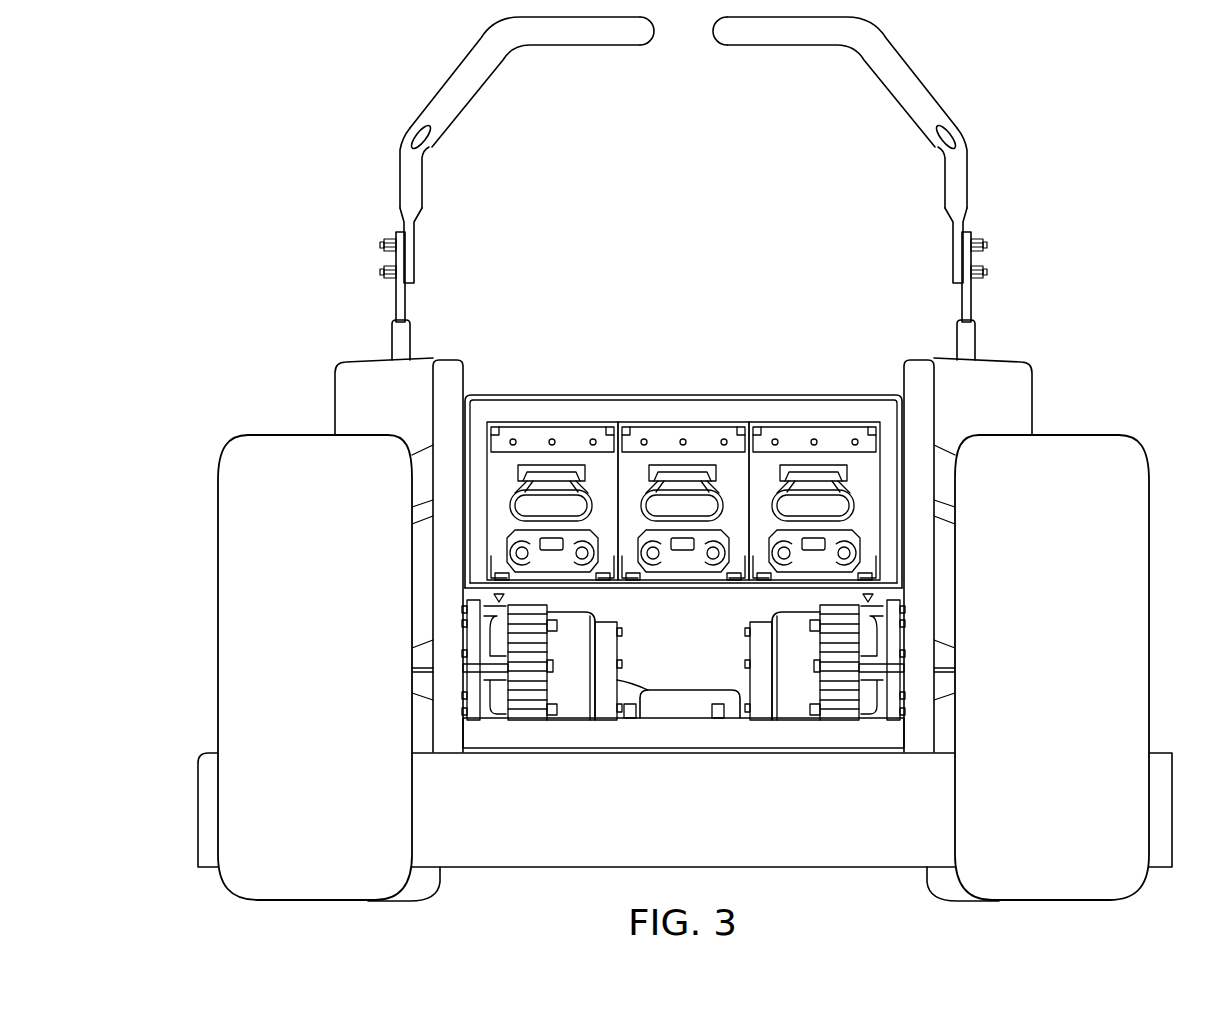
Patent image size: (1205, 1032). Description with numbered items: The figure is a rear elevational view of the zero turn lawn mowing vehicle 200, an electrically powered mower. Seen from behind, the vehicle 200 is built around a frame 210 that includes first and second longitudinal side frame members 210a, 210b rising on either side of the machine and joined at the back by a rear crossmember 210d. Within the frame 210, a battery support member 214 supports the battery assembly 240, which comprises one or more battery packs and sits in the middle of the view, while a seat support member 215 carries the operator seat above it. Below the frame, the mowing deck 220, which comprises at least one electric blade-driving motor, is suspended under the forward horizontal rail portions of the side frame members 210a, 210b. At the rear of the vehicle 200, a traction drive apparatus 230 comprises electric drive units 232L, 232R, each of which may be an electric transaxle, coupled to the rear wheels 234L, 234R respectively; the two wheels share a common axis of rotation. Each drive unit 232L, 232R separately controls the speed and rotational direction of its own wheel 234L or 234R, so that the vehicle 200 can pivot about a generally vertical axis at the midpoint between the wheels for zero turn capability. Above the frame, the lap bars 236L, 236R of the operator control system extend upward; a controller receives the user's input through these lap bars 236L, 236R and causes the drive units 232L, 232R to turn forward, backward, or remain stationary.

The ZT lawn mowing vehicle 200 is at (186, 108).
The frame 210 is at (683, 549).
The first longitudinal side frame member 210a is at (448, 368).
The second longitudinal side frame member 210b is at (920, 368).
The rear crossmember 210d is at (645, 738).
The battery support member 214 is at (661, 592).
The seat support member 215 is at (588, 394).
The mowing deck 220 is at (760, 822).
The traction drive apparatus 230 is at (671, 705).
The electric drive unit 232L is at (570, 697).
The electric drive unit 232R is at (795, 697).
The rear wheel 234L is at (341, 797).
The rear wheel 234R is at (1082, 797).
The lap bar 236L is at (588, 38).
The lap bar 236R is at (779, 38).
The battery assembly 240 is at (757, 405).